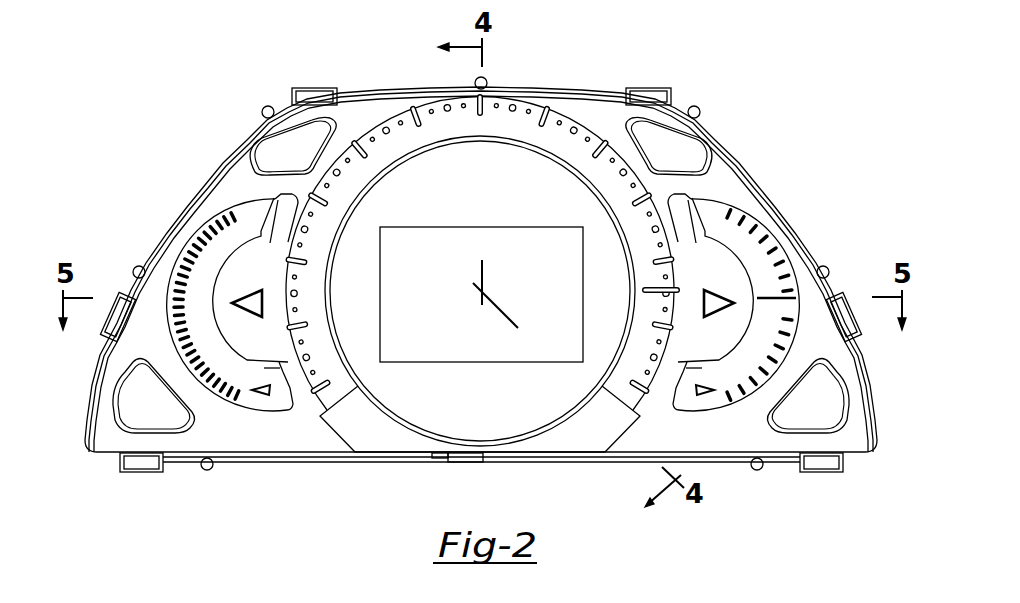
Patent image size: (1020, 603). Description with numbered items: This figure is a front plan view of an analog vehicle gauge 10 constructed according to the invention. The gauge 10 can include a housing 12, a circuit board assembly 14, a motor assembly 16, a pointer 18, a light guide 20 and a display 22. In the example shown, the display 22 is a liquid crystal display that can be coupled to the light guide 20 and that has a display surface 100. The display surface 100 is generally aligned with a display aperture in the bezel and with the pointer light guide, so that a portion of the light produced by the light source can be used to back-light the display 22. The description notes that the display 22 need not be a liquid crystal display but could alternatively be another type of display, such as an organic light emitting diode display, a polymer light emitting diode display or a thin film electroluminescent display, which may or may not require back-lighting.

The analog vehicle gauge 10 is at (788, 103).
The housing 12 is at (721, 128).
The circuit board assembly 14 is at (268, 200).
The motor assembly 16 is at (627, 425).
The pointer 18 is at (666, 292).
The light guide 20 is at (392, 193).
The display 22 is at (431, 352).
The display surface 100 is at (538, 242).